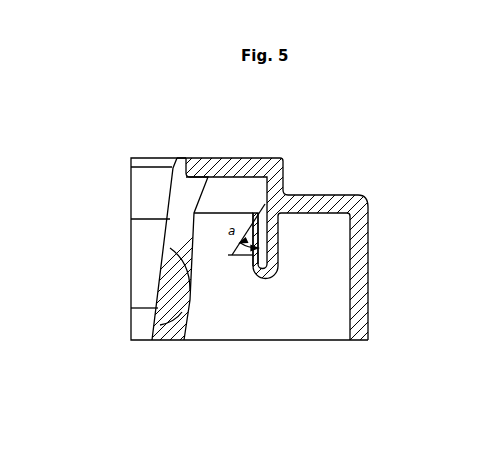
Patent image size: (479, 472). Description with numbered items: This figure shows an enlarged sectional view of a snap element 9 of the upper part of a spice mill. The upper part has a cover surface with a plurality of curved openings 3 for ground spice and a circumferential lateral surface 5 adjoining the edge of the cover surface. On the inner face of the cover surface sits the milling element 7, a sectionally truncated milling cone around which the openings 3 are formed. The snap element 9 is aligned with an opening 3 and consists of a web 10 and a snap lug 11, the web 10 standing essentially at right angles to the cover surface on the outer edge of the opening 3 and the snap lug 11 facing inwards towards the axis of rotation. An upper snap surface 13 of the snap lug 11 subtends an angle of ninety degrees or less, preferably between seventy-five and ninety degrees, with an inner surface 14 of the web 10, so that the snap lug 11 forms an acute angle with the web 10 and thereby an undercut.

The opening 3 is at (256, 162).
The lateral surface 5 is at (350, 305).
The milling element 7 is at (165, 292).
The snap element 9 is at (278, 227).
The web 10 is at (270, 252).
The snap lug 11 is at (262, 270).
The upper snap surface 13 is at (258, 213).
The inner surface 14 is at (261, 228).